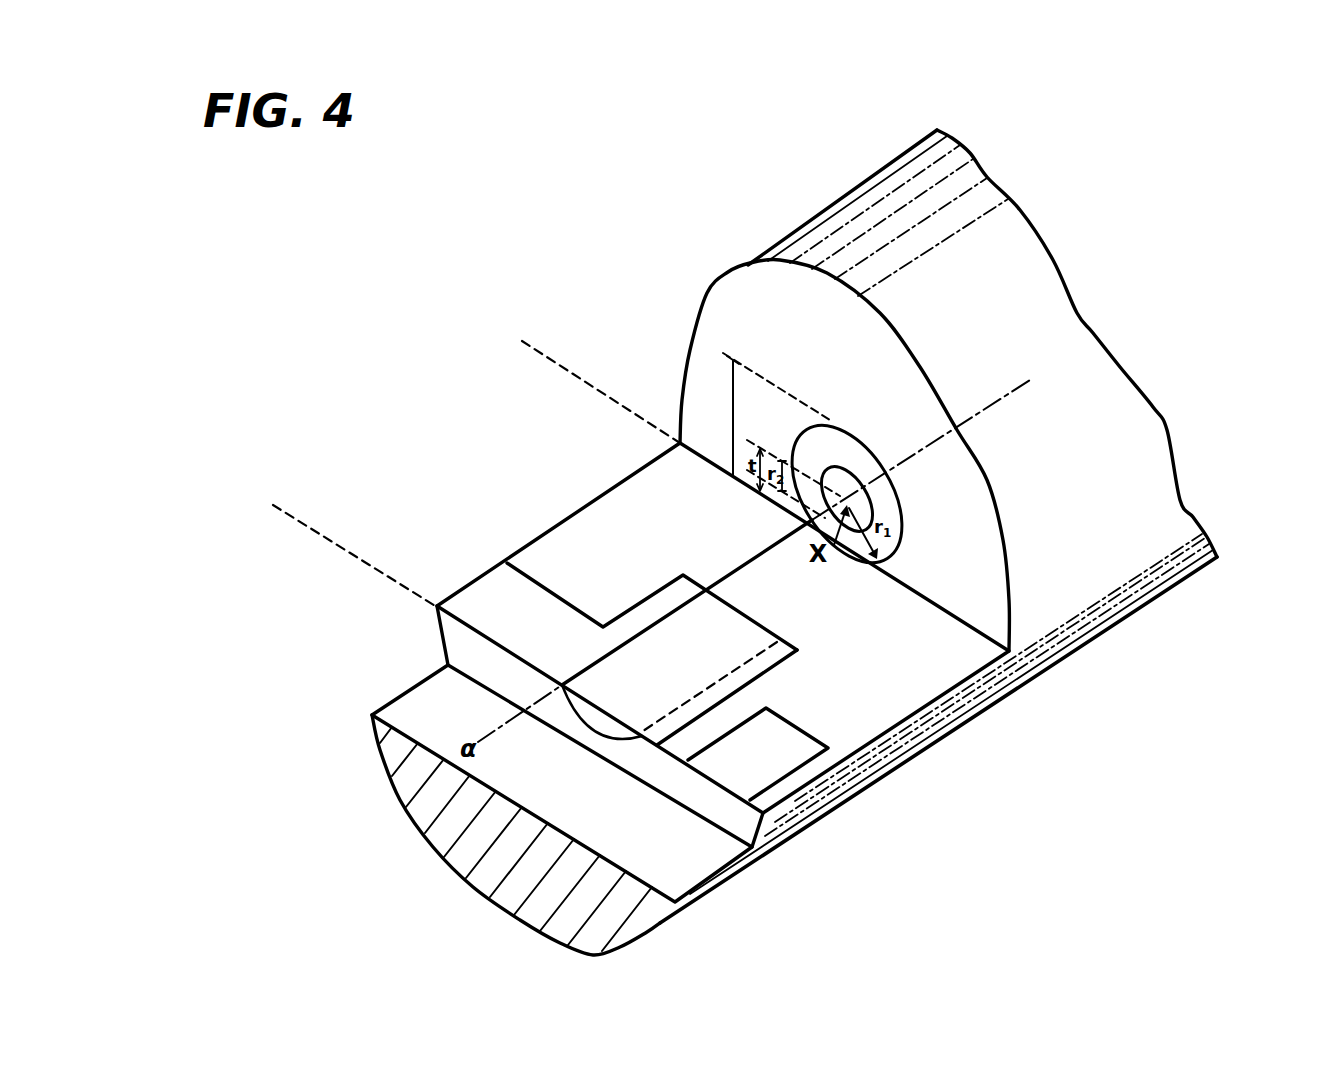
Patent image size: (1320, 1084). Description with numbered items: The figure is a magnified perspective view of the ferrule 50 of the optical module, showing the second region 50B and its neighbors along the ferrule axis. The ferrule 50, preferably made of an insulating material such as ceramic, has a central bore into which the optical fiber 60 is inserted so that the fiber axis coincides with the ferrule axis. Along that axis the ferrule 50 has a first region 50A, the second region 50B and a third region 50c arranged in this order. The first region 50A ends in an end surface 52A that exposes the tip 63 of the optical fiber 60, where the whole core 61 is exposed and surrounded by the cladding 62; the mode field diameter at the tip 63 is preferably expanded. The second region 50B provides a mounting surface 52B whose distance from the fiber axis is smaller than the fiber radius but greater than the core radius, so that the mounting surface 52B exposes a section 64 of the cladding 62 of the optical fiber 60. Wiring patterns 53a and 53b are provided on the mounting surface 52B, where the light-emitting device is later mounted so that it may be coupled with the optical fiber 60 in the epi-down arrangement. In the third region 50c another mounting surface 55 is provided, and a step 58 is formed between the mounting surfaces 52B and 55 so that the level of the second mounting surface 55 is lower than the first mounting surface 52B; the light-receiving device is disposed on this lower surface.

The ferrule 50 is at (1128, 613).
The first region 50A is at (916, 109).
The second region 50B is at (600, 381).
The third region 50c is at (246, 713).
The end surface 52A is at (926, 386).
The mounting surface 52B is at (940, 665).
The wiring pattern 53a is at (553, 622).
The wiring pattern 53b is at (790, 745).
The second mounting surface 55 is at (683, 870).
The step 58 is at (745, 822).
The optical fiber 60 is at (900, 525).
The core 61 is at (850, 468).
The cladding 62 is at (842, 435).
The tip 63 is at (733, 410).
The section 64 is at (792, 600).